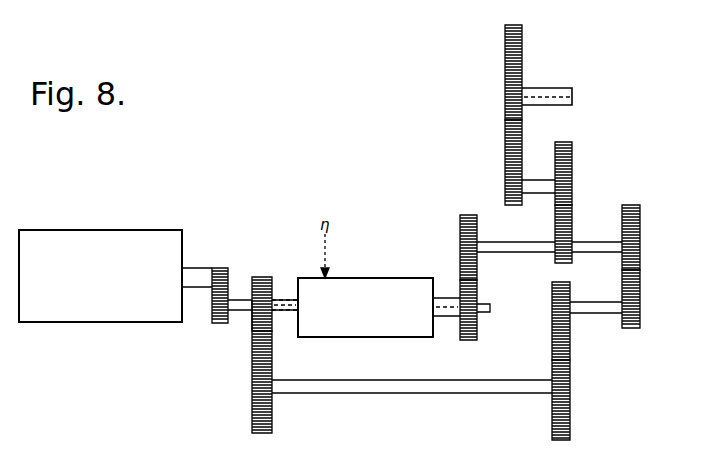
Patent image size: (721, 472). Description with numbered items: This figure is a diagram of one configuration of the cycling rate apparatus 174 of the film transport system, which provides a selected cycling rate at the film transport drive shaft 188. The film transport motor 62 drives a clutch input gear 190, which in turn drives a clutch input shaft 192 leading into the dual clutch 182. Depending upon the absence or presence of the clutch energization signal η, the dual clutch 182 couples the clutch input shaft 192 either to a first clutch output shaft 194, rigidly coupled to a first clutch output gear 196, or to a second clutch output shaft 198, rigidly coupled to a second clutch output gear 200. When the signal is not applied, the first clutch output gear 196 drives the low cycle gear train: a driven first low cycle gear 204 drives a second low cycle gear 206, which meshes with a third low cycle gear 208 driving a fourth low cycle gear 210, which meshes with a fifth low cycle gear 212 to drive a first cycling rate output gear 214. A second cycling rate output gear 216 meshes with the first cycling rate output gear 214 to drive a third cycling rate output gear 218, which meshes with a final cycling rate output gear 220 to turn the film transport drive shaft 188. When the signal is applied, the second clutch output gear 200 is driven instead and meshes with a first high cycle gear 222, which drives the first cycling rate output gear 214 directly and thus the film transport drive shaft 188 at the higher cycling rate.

The film transport motor 62 is at (177, 241).
The cycling rate apparatus 174 is at (298, 178).
The dual clutch 182 is at (387, 284).
The film transport drive shaft 188 is at (572, 90).
The clutch input gear 190 is at (210, 320).
The clutch input shaft 192 is at (238, 295).
The first clutch output shaft 194 is at (275, 291).
The first clutch output gear 196 is at (254, 318).
The second clutch output shaft 198 is at (448, 319).
The second clutch output gear 200 is at (478, 333).
The first low cycle gear 204 is at (254, 410).
The second low cycle gear 206 is at (570, 422).
The third low cycle gear 208 is at (570, 325).
The fourth low cycle gear 210 is at (640, 308).
The fifth low cycle gear 212 is at (640, 240).
The first cycling rate output gear 214 is at (572, 241).
The second cycling rate output gear 216 is at (572, 159).
The third cycling rate output gear 218 is at (505, 168).
The final cycling rate output gear 220 is at (505, 58).
The first high cycle gear 222 is at (461, 237).